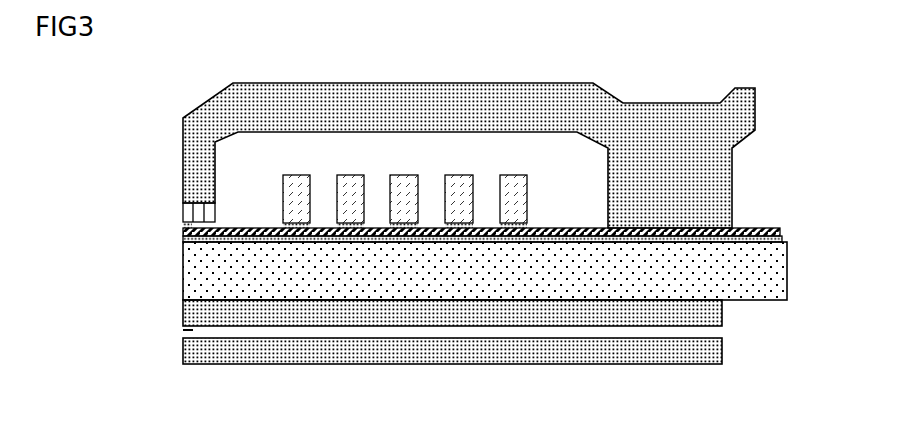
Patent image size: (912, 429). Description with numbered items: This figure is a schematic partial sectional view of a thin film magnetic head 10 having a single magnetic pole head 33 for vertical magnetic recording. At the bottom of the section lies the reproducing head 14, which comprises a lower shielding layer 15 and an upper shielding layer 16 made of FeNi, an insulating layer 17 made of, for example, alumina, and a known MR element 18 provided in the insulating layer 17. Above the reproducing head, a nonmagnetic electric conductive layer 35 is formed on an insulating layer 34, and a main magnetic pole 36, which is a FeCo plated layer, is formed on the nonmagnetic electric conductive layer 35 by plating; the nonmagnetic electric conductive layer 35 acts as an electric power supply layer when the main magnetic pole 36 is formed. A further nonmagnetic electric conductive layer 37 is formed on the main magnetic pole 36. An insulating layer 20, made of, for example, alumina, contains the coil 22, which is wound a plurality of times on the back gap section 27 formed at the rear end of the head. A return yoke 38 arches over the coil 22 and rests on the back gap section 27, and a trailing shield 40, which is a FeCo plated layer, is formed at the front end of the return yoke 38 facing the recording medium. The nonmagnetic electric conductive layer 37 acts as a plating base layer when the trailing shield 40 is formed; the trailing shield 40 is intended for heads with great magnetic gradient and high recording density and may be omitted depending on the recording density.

The magnetic head 10 is at (468, 82).
The reproducing head 14 is at (753, 307).
The lower shielding layer 15 is at (335, 355).
The upper shielding layer 16 is at (378, 320).
The insulating layer 17 is at (425, 332).
The MR element 18 is at (175, 325).
The insulating layer 20 is at (373, 147).
The coil 22 is at (512, 177).
The back gap section 27 is at (638, 142).
The single magnetic pole head 33 is at (813, 93).
The insulating layer 34 is at (780, 268).
The nonmagnetic electric conductive layer 35 is at (210, 243).
The main magnetic pole 36 is at (190, 234).
The nonmagnetic electric conductive layer 37 is at (187, 227).
The return yoke 38 is at (280, 97).
The trailing shield 40 is at (187, 215).